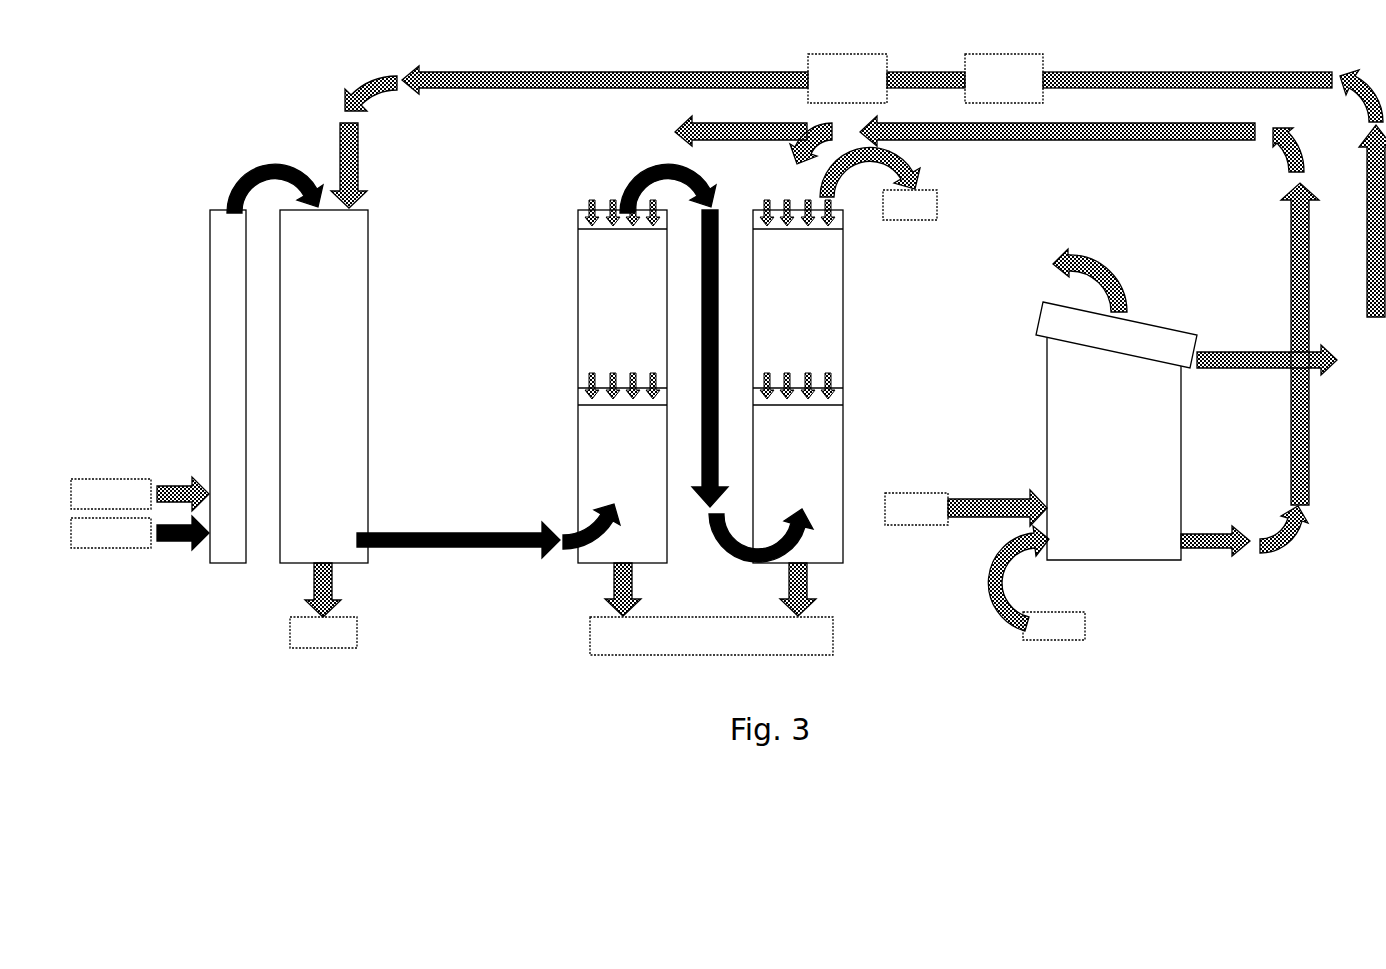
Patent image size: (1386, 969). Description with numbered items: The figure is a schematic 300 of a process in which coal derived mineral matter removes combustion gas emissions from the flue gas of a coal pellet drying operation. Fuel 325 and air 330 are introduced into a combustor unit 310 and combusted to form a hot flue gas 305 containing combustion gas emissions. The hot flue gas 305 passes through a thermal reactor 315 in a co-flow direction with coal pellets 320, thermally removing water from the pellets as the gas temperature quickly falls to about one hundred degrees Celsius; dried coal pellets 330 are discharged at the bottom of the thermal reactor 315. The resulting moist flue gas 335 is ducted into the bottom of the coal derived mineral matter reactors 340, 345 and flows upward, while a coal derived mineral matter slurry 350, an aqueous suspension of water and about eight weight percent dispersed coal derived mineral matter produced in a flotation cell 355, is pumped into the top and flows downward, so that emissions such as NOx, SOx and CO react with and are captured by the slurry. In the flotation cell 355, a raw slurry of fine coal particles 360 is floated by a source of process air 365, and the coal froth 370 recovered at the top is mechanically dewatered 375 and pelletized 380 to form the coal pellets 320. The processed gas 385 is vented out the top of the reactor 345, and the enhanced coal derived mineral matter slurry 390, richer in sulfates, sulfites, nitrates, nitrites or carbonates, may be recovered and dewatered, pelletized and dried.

The schematic 300 is at (243, 128).
The hot flue gas 305 is at (237, 174).
The combustor unit 310 is at (225, 381).
The thermal reactor 315 is at (324, 386).
The coal pellets 320 is at (360, 168).
The fuel 325 is at (140, 494).
The air 330 is at (214, 582).
The moist flue gas 335 is at (447, 549).
The coal derived mineral matter reactor 340 is at (647, 390).
The coal derived mineral matter reactor 345 is at (798, 408).
The coal derived mineral matter slurry 350 is at (660, 147).
The flotation cell 355 is at (1116, 404).
The raw slurry of fine coal particles 360 is at (966, 508).
The process air 365 is at (1036, 583).
The coal froth 370 is at (1235, 352).
The mechanical dewatering 375 is at (1174, 88).
The pelletizing 380 is at (683, 78).
The processed gas 385 is at (878, 184).
The enhanced coal derived mineral matter slurry 390 is at (711, 636).